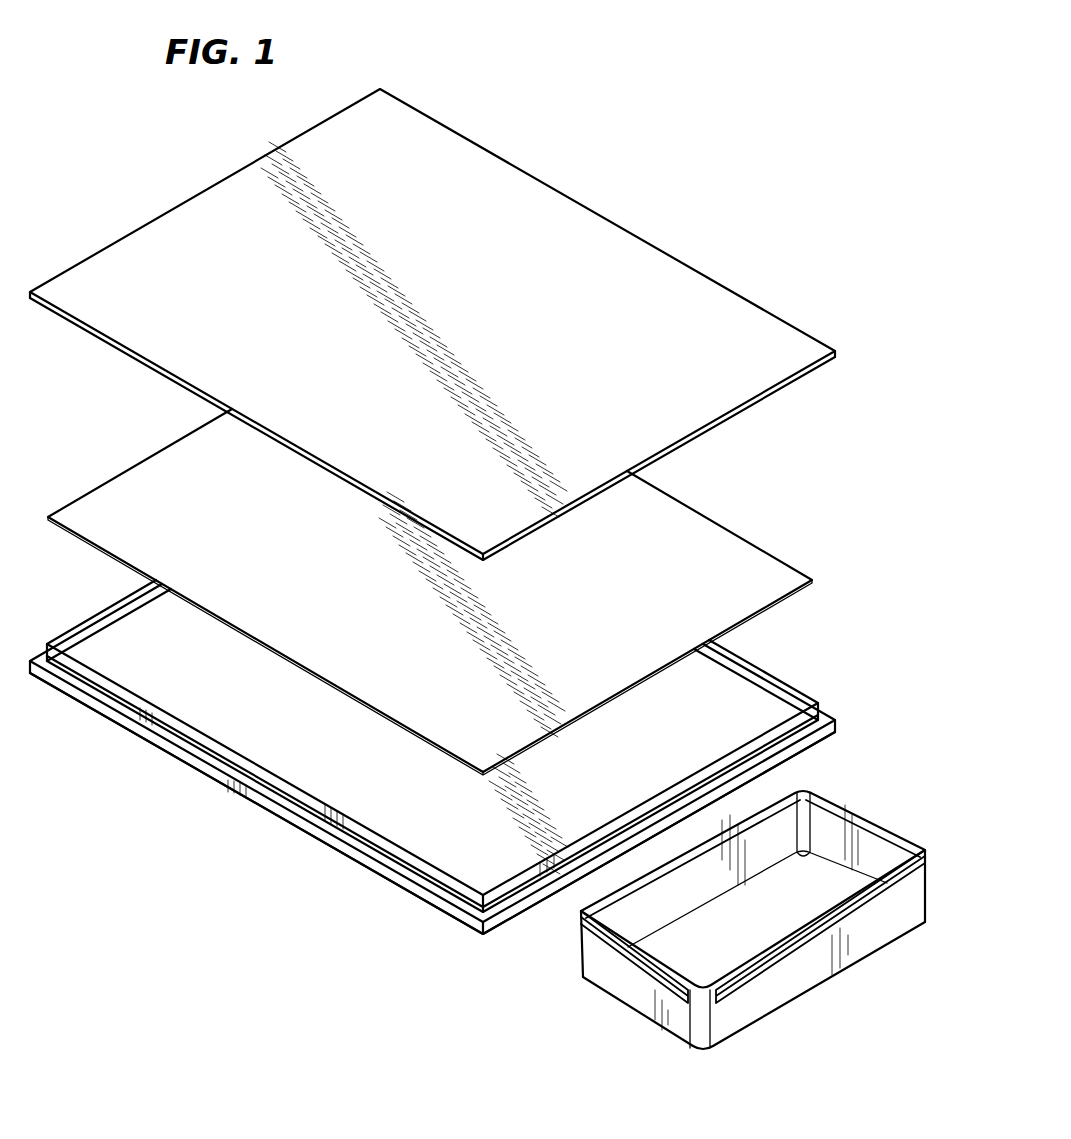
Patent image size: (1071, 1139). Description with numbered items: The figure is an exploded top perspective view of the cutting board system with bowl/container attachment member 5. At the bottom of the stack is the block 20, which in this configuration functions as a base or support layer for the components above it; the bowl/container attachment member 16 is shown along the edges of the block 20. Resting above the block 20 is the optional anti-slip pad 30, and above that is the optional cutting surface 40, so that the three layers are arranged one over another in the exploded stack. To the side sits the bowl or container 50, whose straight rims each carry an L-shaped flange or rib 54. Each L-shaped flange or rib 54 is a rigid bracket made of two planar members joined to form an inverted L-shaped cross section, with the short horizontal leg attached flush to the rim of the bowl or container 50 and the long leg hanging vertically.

The cutting board system with bowl/container attachment member 5 is at (195, 957).
The bowl/container attachment member 16 is at (355, 862).
The block 20 is at (462, 815).
The anti-slip pad 30 is at (449, 636).
The cutting surface 40 is at (452, 424).
The bowl or container 50 is at (759, 1020).
The L-shaped flange or rib 54 is at (780, 795).